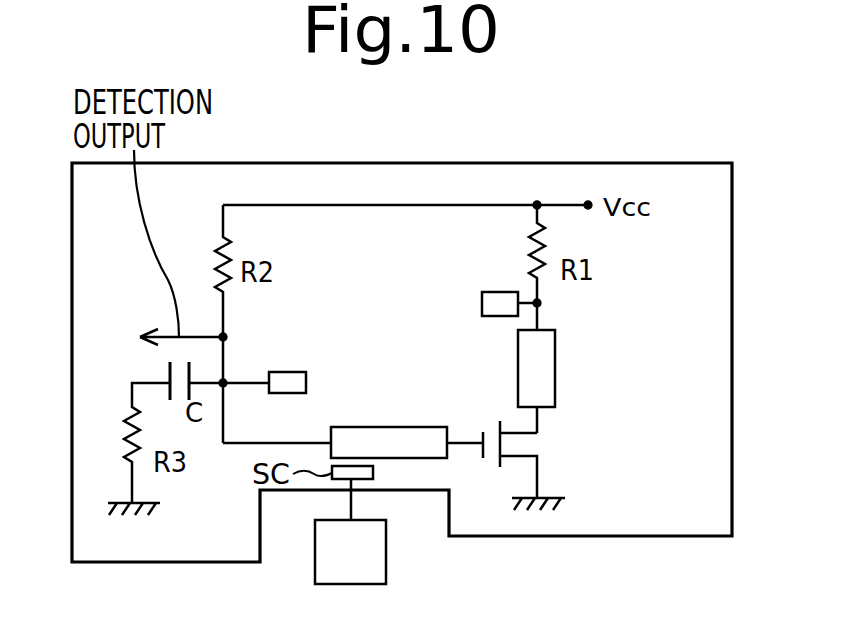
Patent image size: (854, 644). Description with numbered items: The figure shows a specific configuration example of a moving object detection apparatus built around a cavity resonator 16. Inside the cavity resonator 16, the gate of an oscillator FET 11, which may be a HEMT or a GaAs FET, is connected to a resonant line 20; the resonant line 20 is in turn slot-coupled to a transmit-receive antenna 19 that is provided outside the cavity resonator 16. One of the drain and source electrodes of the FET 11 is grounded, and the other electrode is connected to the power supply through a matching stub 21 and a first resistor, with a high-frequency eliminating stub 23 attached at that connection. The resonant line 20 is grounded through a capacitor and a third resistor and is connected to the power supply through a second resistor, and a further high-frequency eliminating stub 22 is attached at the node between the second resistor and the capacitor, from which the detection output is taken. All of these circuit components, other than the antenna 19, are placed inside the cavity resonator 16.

The cavity resonator 16 is at (520, 163).
The transmit-receive antenna 19 is at (386, 555).
The resonant line 20 is at (379, 427).
The matching stub 21 is at (555, 370).
The high-frequency eliminating stub 22 is at (288, 372).
The high-frequency eliminating stub 23 is at (482, 303).
The oscillator FET 11 is at (478, 438).